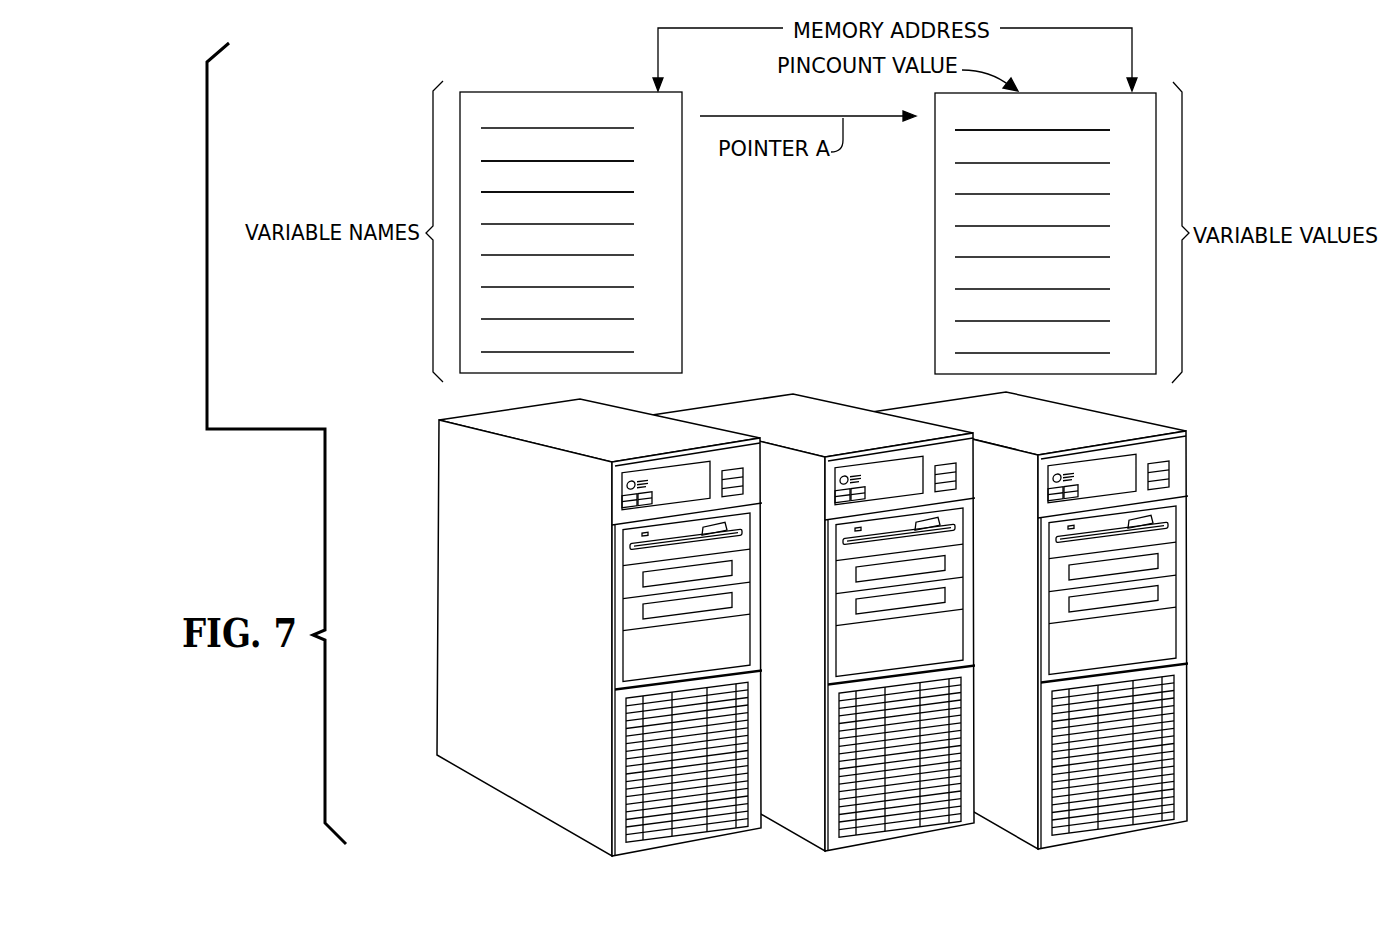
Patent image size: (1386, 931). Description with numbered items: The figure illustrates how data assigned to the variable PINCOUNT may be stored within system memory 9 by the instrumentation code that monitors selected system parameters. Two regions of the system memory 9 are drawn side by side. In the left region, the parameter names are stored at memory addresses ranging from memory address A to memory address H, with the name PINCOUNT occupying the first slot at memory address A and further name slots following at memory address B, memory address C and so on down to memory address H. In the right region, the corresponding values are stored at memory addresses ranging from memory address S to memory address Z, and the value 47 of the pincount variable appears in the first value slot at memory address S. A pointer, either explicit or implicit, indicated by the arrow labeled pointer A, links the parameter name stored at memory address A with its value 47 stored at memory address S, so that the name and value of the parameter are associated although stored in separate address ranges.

The system memory 9 is at (808, 233).
The pincount value stored at memory address S 47 is at (1032, 118).
The memory address A is at (573, 116).
The memory address B is at (572, 150).
The memory address C is at (573, 181).
The memory address H is at (573, 340).
The memory address S is at (1046, 118).
The memory address Z is at (1046, 340).